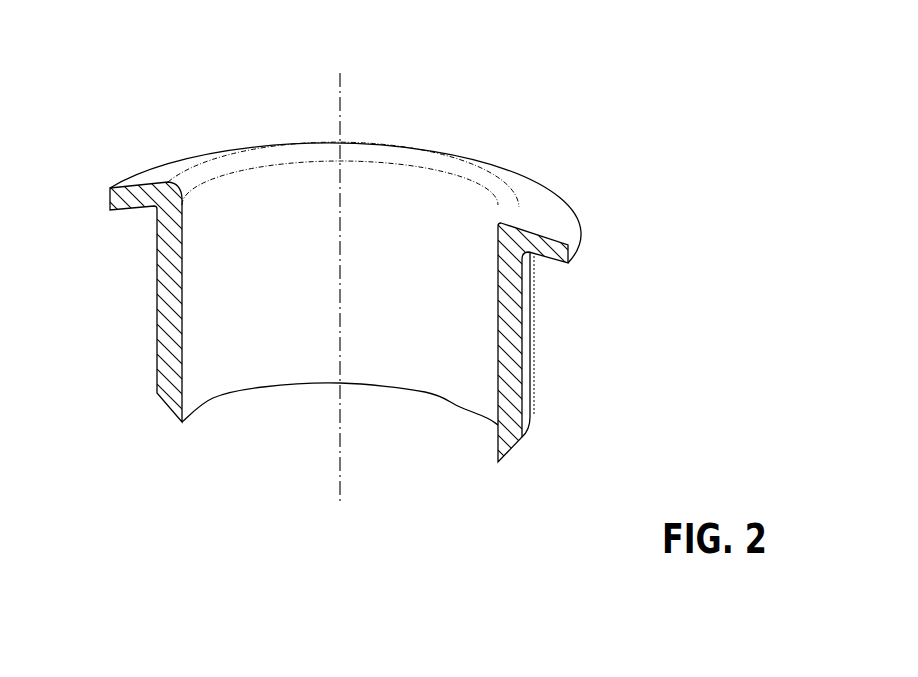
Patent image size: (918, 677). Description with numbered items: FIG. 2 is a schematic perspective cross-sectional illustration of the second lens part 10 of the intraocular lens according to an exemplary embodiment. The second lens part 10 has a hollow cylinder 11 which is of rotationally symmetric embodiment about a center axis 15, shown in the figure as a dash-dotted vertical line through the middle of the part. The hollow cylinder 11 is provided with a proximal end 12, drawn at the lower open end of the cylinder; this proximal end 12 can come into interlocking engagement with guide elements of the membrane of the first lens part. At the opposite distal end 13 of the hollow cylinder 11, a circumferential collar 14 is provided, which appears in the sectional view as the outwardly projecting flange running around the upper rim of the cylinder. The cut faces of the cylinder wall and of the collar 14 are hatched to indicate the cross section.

The second lens part 10 is at (409, 278).
The hollow cylinder 11 is at (521, 348).
The proximal end 12 is at (520, 462).
The distal end 13 is at (590, 199).
The circumferential collar 14 is at (120, 201).
The center axis 15 is at (340, 87).